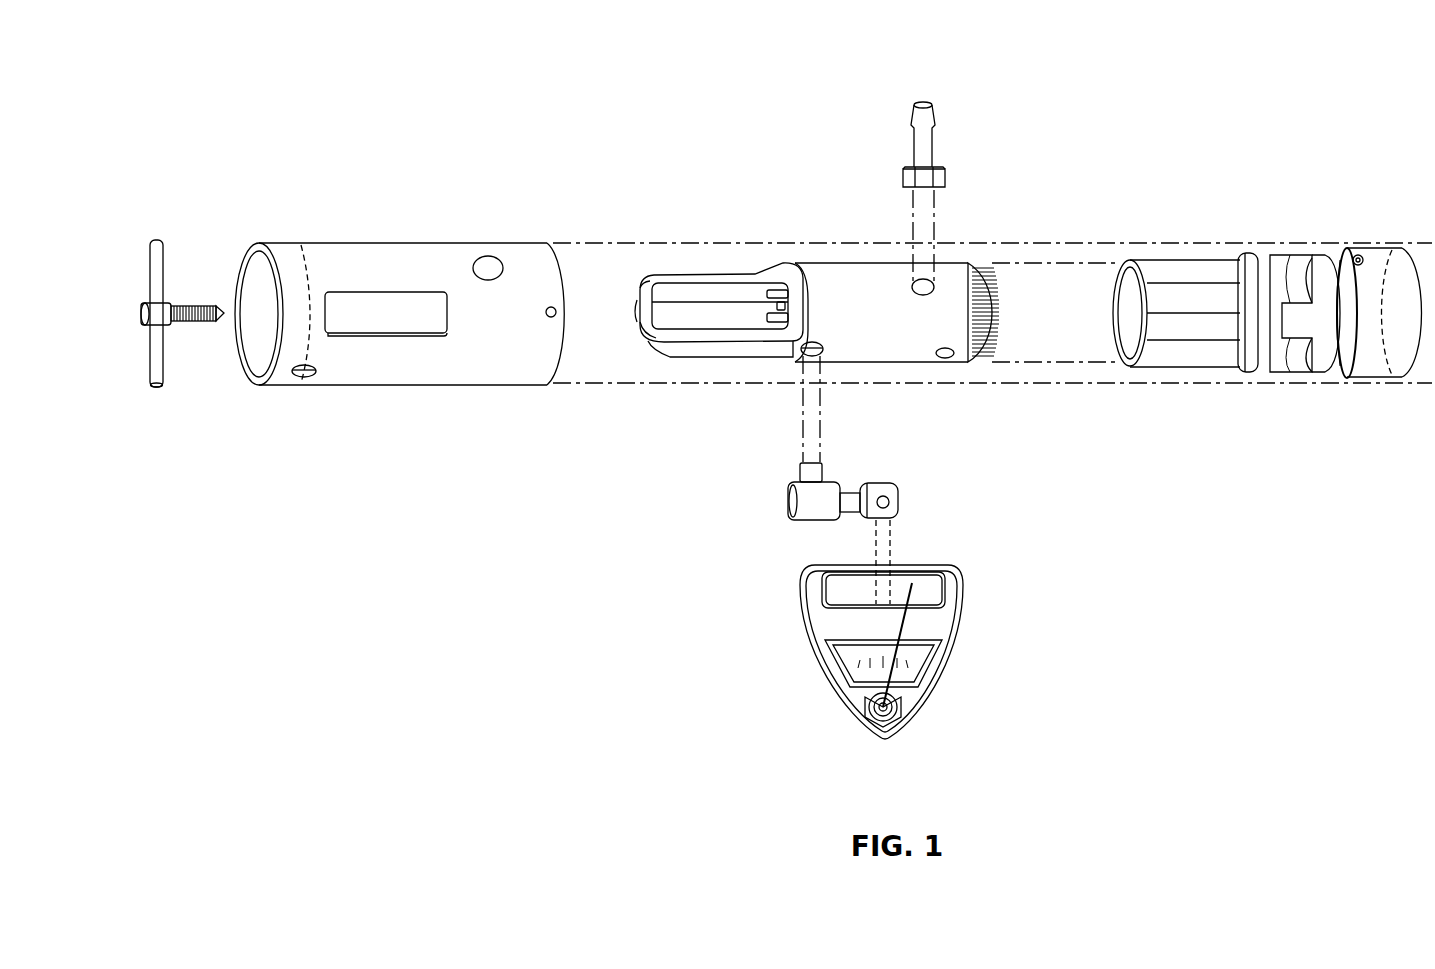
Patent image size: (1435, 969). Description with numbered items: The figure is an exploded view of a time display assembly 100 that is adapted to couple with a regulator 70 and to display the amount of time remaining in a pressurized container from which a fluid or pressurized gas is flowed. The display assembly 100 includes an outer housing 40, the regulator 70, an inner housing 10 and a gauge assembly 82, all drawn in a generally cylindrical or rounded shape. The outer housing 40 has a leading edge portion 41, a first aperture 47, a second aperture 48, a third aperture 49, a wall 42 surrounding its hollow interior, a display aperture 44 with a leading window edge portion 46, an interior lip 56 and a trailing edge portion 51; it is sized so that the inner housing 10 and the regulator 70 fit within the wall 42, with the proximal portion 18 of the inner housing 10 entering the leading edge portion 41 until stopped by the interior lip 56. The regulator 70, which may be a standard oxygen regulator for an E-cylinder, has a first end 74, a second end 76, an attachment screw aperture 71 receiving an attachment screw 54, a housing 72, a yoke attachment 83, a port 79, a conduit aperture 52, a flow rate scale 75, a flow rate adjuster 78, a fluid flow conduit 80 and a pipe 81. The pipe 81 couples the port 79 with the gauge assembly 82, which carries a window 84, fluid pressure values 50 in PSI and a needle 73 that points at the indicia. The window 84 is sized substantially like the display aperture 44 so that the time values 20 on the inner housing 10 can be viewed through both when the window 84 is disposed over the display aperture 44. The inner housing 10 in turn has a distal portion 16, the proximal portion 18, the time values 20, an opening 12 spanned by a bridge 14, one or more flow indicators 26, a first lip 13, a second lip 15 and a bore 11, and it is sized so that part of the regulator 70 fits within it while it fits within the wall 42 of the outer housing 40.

The display assembly 100 is at (238, 108).
The inner housing 10 is at (1232, 152).
The bore 11 is at (1372, 246).
The opening 12 is at (1270, 372).
The first lip 13 is at (1248, 242).
The bridge 14 is at (1314, 323).
The second lip 15 is at (1360, 254).
The distal portion 16 is at (1379, 297).
The proximal portion 18 is at (1164, 310).
The time values 20 is at (1150, 270).
The flow indicators 26 is at (1300, 282).
The outer housing 40 is at (405, 291).
The leading edge portion 41 is at (562, 276).
The wall 42 is at (366, 376).
The display aperture 44 is at (390, 318).
The leading window edge portion 46 is at (438, 302).
The first aperture 47 is at (304, 376).
The second aperture 48 is at (488, 265).
The third aperture 49 is at (556, 316).
The fluid pressure values 50 is at (830, 670).
The trailing edge portion 51 is at (258, 374).
The conduit aperture 52 is at (918, 282).
The attachment screw 54 is at (168, 306).
The interior lip 56 is at (306, 258).
The regulator 70 is at (693, 306).
The attachment screw aperture 71 is at (636, 312).
The housing 72 is at (884, 315).
The needle 73 is at (895, 676).
The first end 74 is at (978, 246).
The flow rate scale 75 is at (945, 358).
The second end 76 is at (622, 292).
The flow rate adjuster 78 is at (980, 358).
The port 79 is at (808, 354).
The fluid flow conduit 80 is at (910, 148).
The pipe 81 is at (915, 500).
The gauge assembly 82 is at (905, 646).
The yoke attachment 83 is at (672, 288).
The window 84 is at (830, 585).